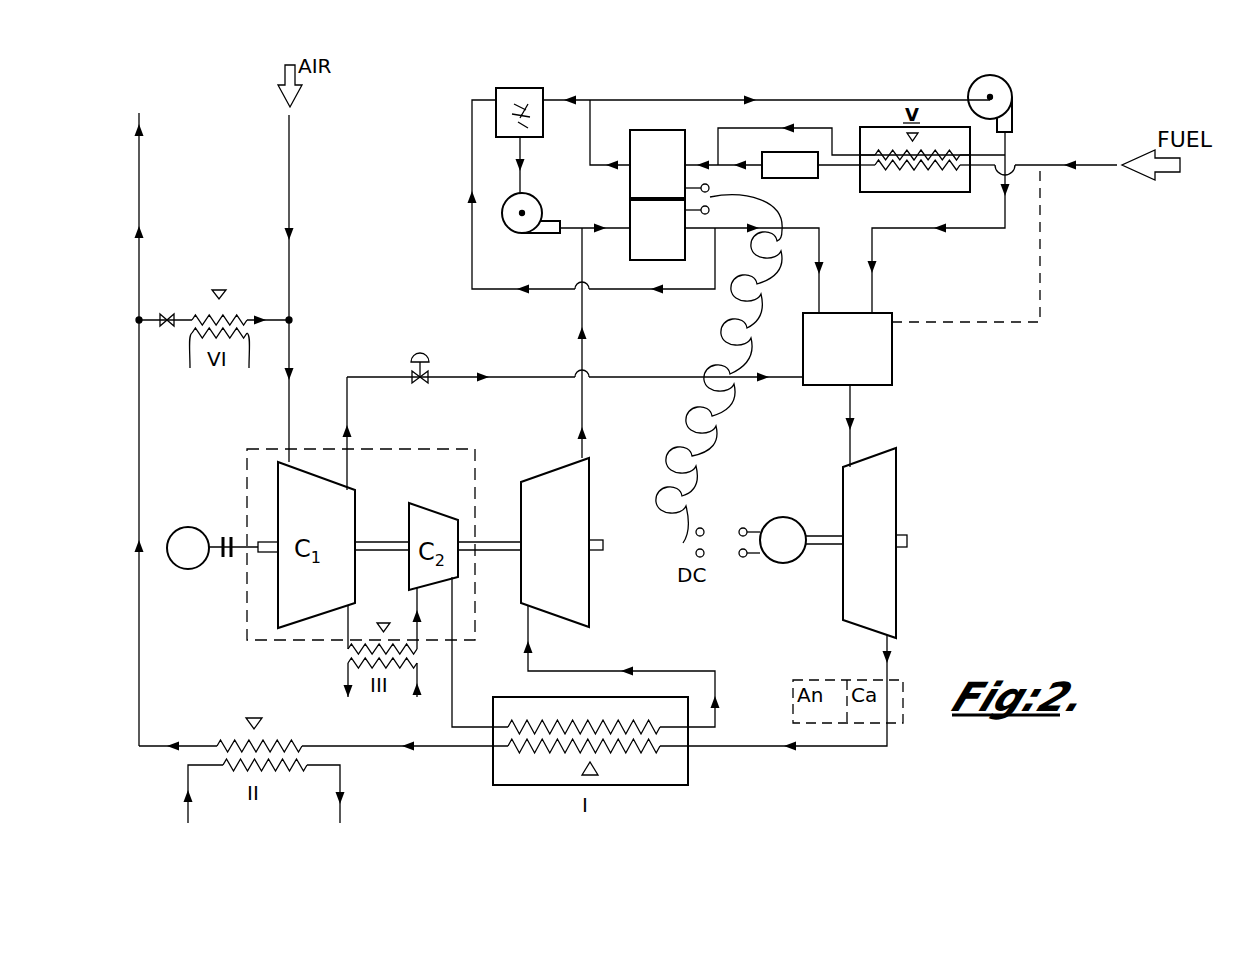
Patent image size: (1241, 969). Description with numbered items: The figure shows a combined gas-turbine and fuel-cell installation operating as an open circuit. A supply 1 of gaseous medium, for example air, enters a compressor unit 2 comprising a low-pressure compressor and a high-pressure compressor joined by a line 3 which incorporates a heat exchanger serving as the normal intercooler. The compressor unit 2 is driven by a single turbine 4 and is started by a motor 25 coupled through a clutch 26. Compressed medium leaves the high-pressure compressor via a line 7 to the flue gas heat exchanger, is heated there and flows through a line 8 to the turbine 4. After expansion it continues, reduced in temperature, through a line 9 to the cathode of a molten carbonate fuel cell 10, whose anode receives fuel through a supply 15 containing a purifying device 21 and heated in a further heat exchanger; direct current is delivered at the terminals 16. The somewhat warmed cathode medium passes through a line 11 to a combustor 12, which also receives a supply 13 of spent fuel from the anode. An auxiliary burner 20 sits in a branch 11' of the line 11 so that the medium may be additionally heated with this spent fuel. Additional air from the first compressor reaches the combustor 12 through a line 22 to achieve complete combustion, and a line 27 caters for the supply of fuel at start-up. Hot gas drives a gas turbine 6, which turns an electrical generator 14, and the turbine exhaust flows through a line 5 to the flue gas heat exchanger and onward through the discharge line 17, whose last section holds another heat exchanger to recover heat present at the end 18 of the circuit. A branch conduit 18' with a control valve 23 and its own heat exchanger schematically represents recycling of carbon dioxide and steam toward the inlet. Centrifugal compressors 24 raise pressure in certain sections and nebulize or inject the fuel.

The supply of gaseous medium 1 is at (292, 274).
The compressor unit 2 is at (247, 470).
The line 3 is at (417, 615).
The turbine 4 is at (590, 507).
The line 5 is at (843, 746).
The gas turbine 6 is at (896, 475).
The line 7 is at (452, 675).
The line 8 is at (648, 671).
The line 9 is at (583, 403).
The fuel cell 10 is at (630, 198).
The line 11 is at (766, 254).
The branch 11' is at (592, 213).
The combustor 12 is at (892, 357).
The supply of spent fuel 13 is at (797, 100).
The electrical generator 14 is at (797, 518).
The supply of fuel 15 is at (1085, 163).
The terminals 16 is at (700, 188).
The discharge line 17 is at (373, 746).
The end of the open circuit 18 is at (121, 429).
The branch conduit 18' is at (214, 352).
The auxiliary burner 20 is at (535, 88).
The purifying device 21 is at (787, 178).
The line 22 is at (635, 377).
The control valve 23 is at (167, 317).
The centrifugal compressor 24 is at (520, 235).
The motor 25 is at (190, 570).
The clutch 26 is at (225, 535).
The line 27 is at (1040, 220).